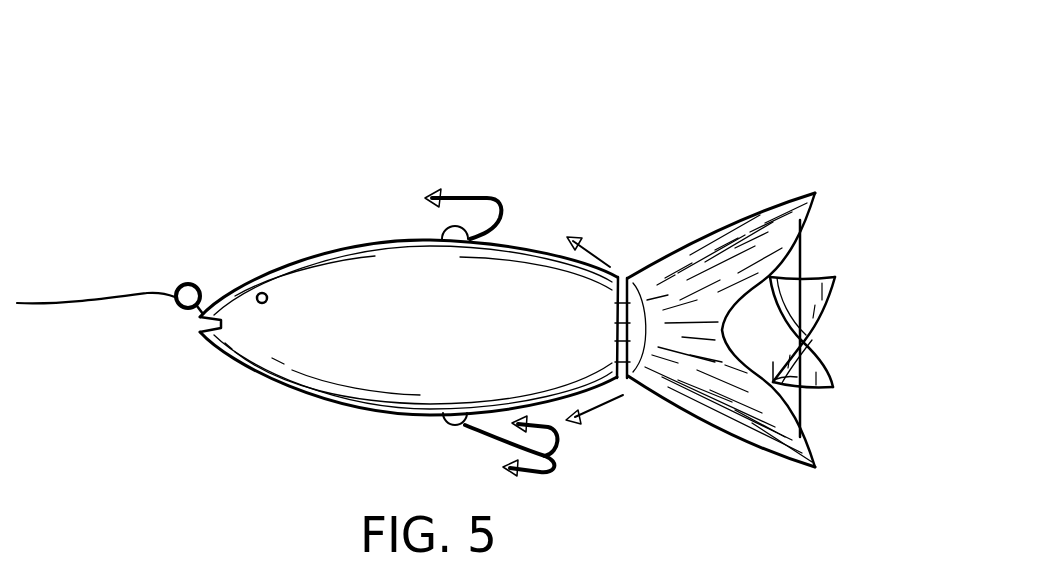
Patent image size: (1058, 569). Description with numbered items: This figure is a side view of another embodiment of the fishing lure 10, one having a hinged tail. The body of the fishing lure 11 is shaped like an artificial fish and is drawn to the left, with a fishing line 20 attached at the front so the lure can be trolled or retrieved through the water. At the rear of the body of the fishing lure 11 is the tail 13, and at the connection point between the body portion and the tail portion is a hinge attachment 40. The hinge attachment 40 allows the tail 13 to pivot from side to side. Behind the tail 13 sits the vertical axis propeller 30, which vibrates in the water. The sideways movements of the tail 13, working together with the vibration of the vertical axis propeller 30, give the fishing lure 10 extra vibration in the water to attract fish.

The fishing lure 10 is at (198, 128).
The body of the fishing lure 11 is at (357, 243).
The tail 13 is at (645, 280).
The fishing line 20 is at (88, 303).
The vertical axis propeller 30 is at (836, 297).
The hinge attachment 40 is at (623, 280).